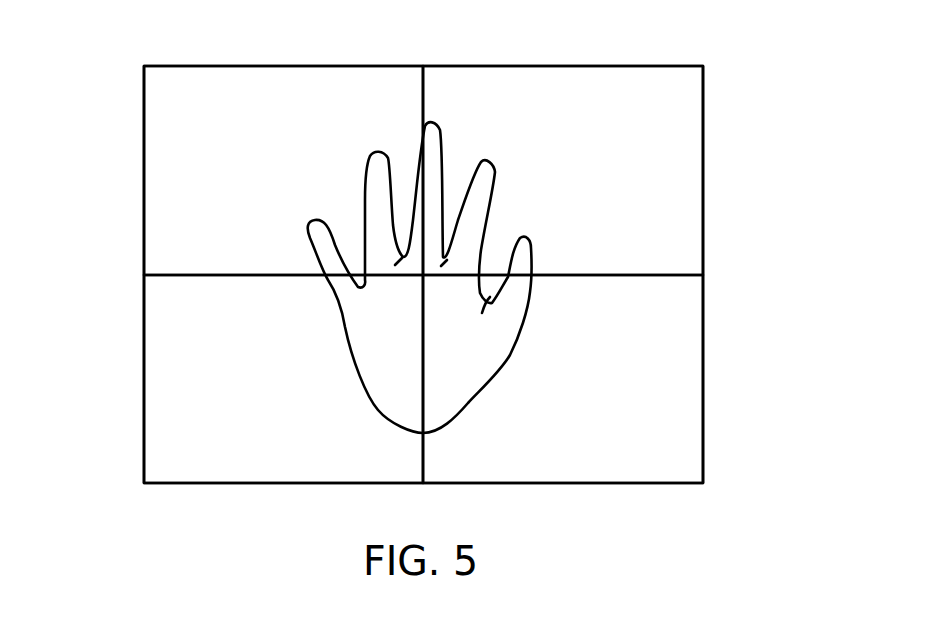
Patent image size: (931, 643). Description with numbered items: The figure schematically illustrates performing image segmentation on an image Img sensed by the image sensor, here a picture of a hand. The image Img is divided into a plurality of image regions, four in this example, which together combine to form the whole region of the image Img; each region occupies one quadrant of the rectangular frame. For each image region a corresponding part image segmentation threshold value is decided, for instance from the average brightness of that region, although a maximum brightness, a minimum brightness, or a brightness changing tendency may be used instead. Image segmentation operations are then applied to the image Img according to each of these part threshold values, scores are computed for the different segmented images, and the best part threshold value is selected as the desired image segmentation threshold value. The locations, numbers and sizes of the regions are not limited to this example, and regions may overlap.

The image Img is at (638, 67).